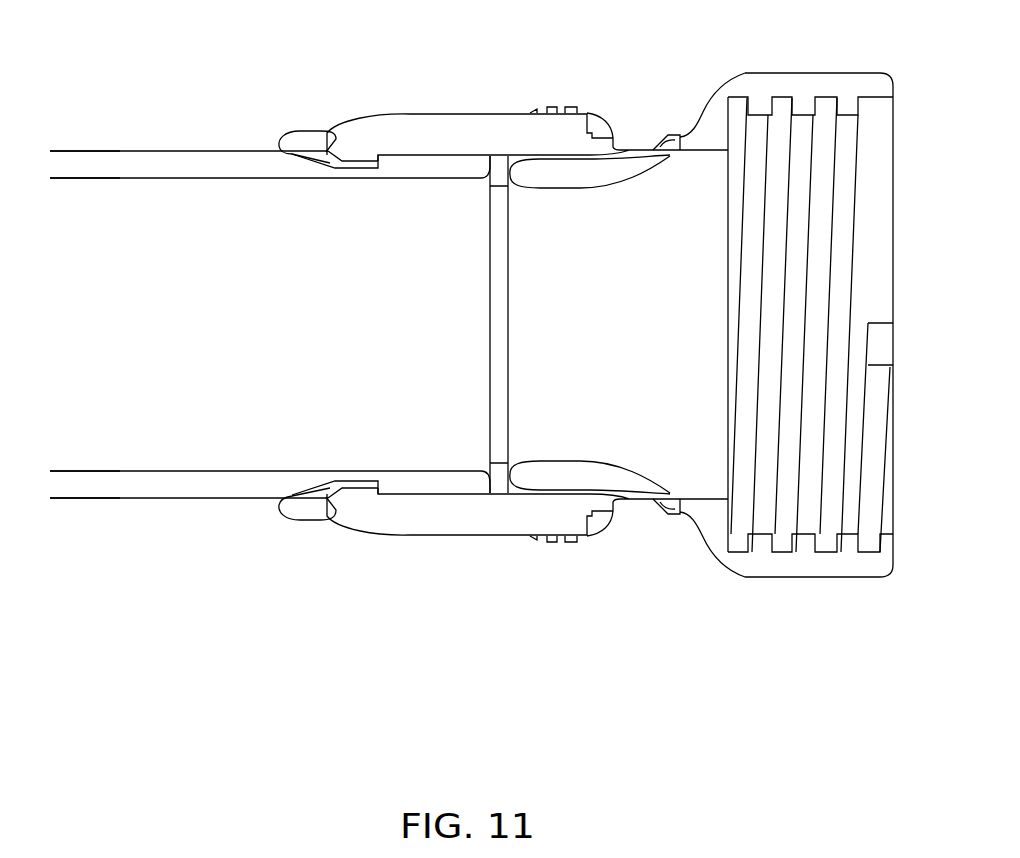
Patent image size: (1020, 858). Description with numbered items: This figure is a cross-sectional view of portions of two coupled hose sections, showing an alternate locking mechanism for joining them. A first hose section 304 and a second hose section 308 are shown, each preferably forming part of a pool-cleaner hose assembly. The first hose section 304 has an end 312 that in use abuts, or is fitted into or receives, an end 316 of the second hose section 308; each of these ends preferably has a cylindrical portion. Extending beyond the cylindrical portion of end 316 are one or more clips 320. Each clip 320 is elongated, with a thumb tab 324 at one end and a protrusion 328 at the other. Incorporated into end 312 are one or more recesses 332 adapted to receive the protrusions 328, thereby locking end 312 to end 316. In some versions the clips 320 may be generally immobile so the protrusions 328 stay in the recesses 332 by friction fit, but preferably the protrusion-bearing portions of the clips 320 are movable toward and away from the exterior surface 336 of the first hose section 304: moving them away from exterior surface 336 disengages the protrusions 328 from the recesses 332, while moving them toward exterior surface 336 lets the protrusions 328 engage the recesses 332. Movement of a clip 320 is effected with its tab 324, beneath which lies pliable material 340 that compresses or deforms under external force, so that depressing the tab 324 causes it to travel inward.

The first hose section 304 is at (163, 150).
The second hose section 308 is at (648, 515).
The end of first hose section 312 is at (433, 488).
The end of second hose section 316 is at (646, 112).
The clip 320 is at (495, 112).
The tab 324 is at (558, 107).
The protrusion 328 is at (357, 165).
The recess 332 is at (340, 164).
The exterior surface 336 is at (115, 136).
The pliable material 340 is at (585, 180).